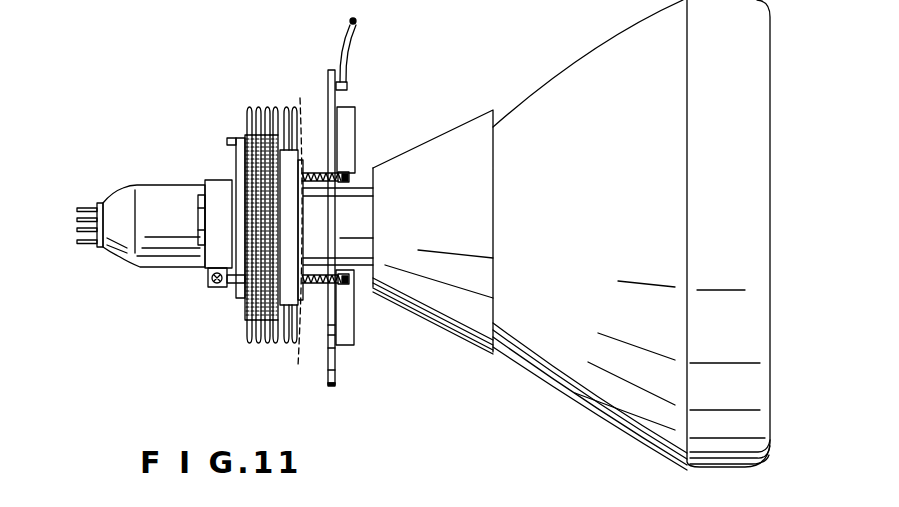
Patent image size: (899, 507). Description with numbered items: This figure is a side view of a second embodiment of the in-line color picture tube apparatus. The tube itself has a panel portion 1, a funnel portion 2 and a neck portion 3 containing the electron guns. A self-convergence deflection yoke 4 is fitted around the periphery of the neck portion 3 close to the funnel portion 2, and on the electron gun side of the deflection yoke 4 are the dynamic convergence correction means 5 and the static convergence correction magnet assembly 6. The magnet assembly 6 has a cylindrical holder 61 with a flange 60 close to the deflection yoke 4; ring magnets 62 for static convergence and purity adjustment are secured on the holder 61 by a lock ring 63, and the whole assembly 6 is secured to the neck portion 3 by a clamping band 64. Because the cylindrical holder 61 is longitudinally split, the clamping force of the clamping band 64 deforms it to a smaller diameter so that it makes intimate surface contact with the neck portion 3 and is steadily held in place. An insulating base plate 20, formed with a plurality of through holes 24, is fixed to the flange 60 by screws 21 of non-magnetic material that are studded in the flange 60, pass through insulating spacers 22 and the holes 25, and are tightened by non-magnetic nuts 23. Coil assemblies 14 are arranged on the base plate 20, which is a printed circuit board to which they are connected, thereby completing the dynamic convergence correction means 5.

The panel portion 1 is at (720, 449).
The funnel portion 2 is at (592, 389).
The neck portion 3 is at (157, 193).
The self-convergence deflection yoke 4 is at (449, 312).
The dynamic convergence correction means 5 is at (360, 215).
The static convergence correction magnet assembly 6 is at (242, 263).
The coil assemblies 14 is at (356, 120).
The insulating base plate 20 is at (334, 70).
The screws 21 is at (300, 229).
The insulating spacers 22 is at (316, 172).
The non-magnetic nuts 23 is at (348, 178).
The through holes 24 is at (358, 50).
The holes 25 is at (320, 186).
The flange 60 is at (300, 218).
The cylindrical holder 61 is at (198, 212).
The ring magnets 62 is at (292, 354).
The lock ring 63 is at (237, 305).
The clamping band 64 is at (216, 290).